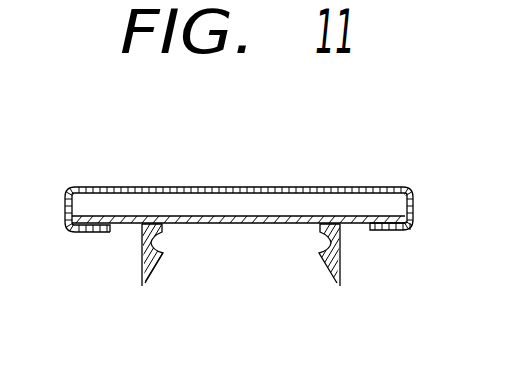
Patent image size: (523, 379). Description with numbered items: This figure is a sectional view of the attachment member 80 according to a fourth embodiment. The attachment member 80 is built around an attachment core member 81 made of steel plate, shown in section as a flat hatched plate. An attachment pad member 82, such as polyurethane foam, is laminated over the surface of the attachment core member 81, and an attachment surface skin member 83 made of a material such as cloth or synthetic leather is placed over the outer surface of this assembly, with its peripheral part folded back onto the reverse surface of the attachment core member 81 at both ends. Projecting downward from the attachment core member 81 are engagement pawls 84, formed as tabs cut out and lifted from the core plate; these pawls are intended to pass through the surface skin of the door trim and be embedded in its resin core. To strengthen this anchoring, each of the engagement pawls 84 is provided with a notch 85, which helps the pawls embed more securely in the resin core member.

The attachment member 80 is at (350, 174).
The attachment core member 81 is at (235, 223).
The attachment pad member 82 is at (197, 203).
The attachment surface skin member 83 is at (285, 189).
The engagement pawl 84 is at (145, 276).
The notch 85 is at (166, 243).